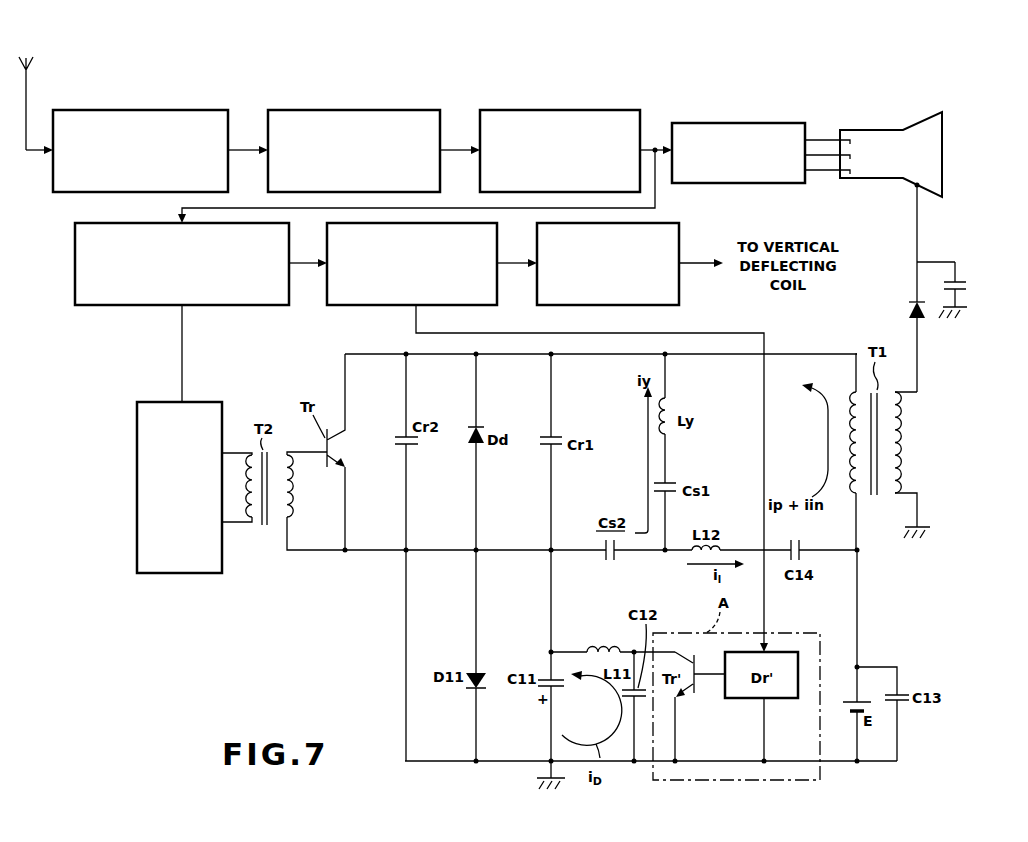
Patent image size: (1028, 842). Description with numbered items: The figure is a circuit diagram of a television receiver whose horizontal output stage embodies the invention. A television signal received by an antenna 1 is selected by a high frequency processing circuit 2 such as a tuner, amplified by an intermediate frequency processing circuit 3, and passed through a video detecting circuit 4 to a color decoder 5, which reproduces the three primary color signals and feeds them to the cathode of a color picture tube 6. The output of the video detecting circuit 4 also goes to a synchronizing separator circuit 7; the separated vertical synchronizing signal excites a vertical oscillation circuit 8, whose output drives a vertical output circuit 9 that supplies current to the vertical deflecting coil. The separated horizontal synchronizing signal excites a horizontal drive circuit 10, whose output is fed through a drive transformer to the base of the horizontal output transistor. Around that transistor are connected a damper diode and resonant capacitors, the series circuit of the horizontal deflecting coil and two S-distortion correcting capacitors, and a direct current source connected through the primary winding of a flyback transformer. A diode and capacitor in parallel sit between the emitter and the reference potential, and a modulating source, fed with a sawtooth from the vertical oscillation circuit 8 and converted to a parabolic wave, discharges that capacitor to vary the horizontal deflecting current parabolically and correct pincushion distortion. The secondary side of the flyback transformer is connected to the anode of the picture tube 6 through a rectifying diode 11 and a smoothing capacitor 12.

The antenna 1 is at (30, 63).
The high frequency (RF) processing circuit 2 is at (145, 110).
The intermediate frequency (IF) processing circuit 3 is at (350, 110).
The video detecting circuit 4 is at (558, 110).
The color decoder 5 is at (742, 123).
The color picture tube 6 is at (878, 130).
The synchronizing separator circuit 7 is at (232, 305).
The vertical oscillation circuit 8 is at (373, 305).
The vertical output circuit 9 is at (608, 305).
The horizontal drive circuit 10 is at (137, 453).
The rectifying diode 11 is at (912, 300).
The capacitor 12 is at (970, 287).